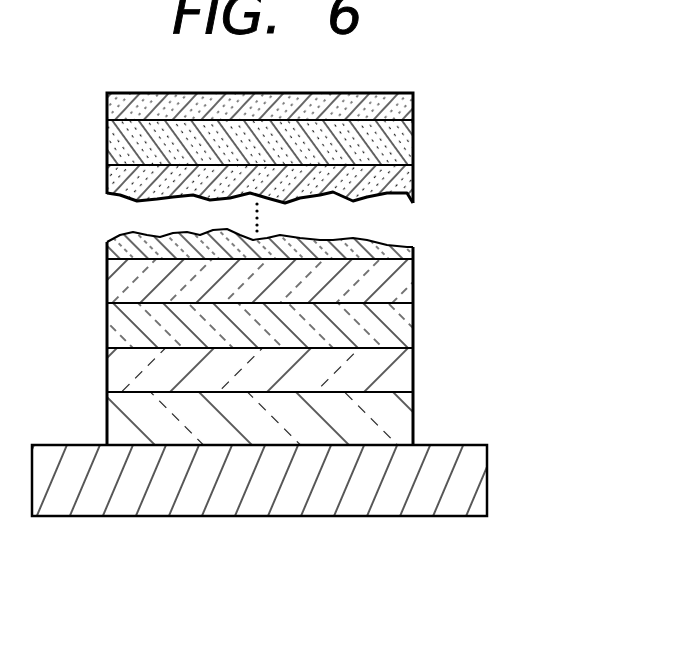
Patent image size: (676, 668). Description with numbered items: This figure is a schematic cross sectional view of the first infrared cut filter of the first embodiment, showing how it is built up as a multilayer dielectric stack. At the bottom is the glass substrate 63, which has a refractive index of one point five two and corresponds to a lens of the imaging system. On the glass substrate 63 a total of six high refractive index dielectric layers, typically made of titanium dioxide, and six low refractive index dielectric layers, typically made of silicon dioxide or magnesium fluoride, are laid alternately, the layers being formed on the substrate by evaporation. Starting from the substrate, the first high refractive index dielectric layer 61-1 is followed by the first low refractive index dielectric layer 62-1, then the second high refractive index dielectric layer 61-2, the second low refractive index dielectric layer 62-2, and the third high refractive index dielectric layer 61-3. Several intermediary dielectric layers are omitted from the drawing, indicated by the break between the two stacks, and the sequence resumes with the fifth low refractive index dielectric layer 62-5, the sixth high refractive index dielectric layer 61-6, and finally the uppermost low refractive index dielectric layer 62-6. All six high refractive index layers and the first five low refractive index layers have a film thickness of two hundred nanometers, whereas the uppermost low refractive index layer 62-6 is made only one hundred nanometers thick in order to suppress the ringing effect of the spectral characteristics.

The uppermost low refractive index dielectric layer 62-6 is at (400, 107).
The high refractive index dielectric layer 61-6 is at (400, 143).
The low refractive index dielectric layer 62-5 is at (400, 180).
The high refractive index dielectric layer 61-3 is at (400, 251).
The low refractive index dielectric layer 62-2 is at (400, 285).
The high refractive index dielectric layer 61-2 is at (400, 328).
The low refractive index dielectric layer 62-1 is at (398, 373).
The high refractive index dielectric layer 61-1 is at (398, 413).
The glass substrate 63 is at (480, 483).